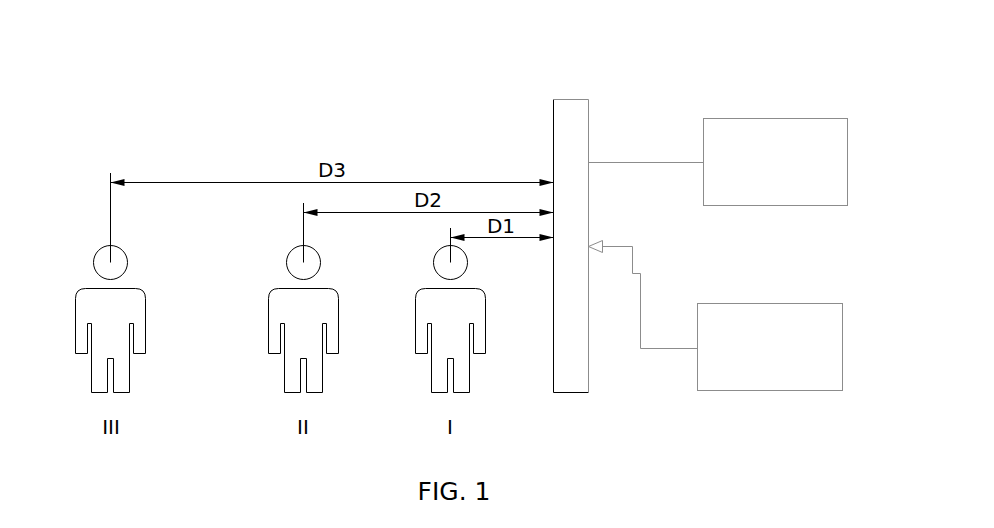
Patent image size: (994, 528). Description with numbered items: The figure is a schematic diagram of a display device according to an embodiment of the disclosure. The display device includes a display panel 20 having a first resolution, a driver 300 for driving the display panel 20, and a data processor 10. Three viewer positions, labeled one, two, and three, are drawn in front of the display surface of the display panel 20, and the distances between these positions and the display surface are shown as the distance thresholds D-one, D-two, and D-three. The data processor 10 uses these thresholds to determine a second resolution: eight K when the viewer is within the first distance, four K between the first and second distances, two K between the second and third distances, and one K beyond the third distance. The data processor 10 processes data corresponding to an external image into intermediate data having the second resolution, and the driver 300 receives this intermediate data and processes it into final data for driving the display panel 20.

The display panel 20 is at (570, 114).
The driver 300 is at (768, 118).
The data processor 10 is at (768, 304).